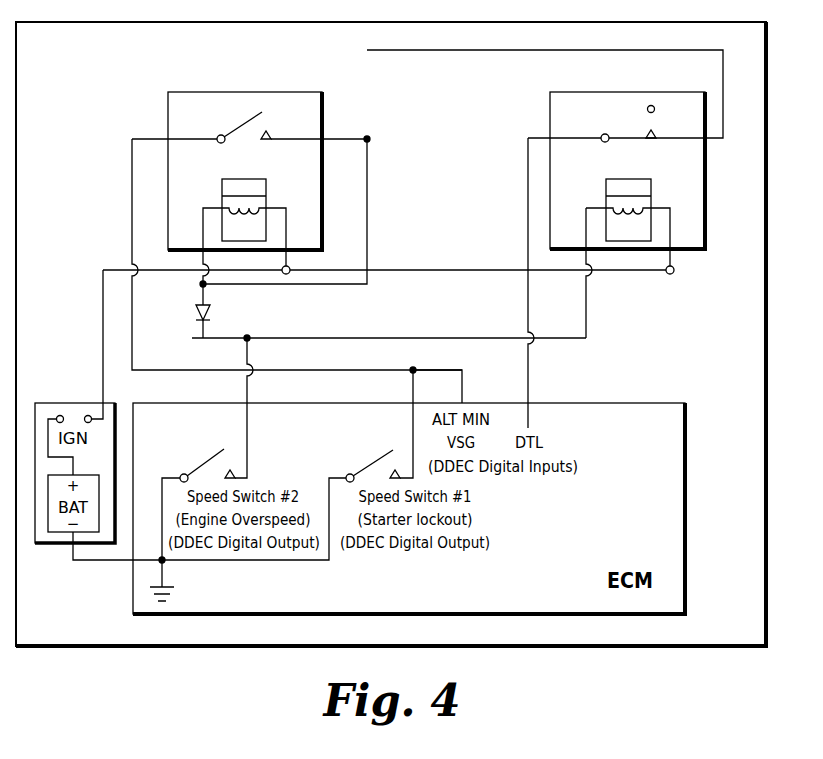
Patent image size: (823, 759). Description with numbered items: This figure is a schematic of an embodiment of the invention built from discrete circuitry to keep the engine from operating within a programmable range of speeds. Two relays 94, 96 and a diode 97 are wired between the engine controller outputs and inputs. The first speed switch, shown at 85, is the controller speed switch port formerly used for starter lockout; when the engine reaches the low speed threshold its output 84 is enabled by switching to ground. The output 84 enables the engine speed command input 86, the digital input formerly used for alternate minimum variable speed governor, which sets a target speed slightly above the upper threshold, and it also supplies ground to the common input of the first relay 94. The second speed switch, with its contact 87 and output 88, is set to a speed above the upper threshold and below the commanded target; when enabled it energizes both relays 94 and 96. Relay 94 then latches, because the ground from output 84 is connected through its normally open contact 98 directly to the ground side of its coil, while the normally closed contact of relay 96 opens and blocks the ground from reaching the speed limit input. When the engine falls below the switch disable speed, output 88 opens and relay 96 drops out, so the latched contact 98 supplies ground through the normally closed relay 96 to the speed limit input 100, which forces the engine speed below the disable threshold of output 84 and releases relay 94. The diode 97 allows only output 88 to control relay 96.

The first relay 94 is at (302, 92).
The second relay 96 is at (567, 91).
The diode 97 is at (195, 312).
The normally open contact 98 is at (340, 140).
The engine speed command input 86 is at (462, 387).
The speed switch #2 output 88 is at (247, 421).
The speed switch #2 (engine overspeed) 87 is at (232, 476).
The speed switch #1 output 84 is at (413, 422).
The speed switch #1 85 is at (395, 478).
The engine speed limit input 100 is at (528, 417).